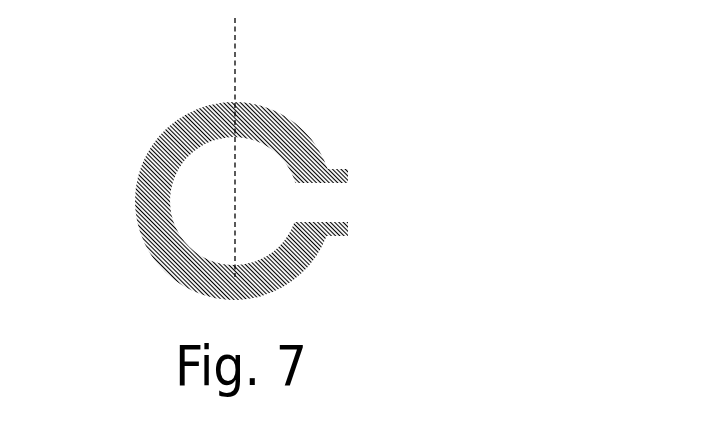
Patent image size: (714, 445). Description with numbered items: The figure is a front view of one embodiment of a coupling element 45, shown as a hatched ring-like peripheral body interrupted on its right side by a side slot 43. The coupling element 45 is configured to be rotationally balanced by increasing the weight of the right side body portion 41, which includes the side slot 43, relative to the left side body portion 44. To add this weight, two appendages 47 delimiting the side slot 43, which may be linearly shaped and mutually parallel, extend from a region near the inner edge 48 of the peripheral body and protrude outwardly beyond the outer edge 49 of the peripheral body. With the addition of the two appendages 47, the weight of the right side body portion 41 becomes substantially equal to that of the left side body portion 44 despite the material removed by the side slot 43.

The right side body portion 41 is at (248, 120).
The side slot 43 is at (325, 202).
The left side body portion 44 is at (162, 150).
The coupling element 45 is at (332, 123).
The appendages 47 is at (342, 172).
The inner edge 48 is at (215, 137).
The outer edge 49 is at (180, 263).